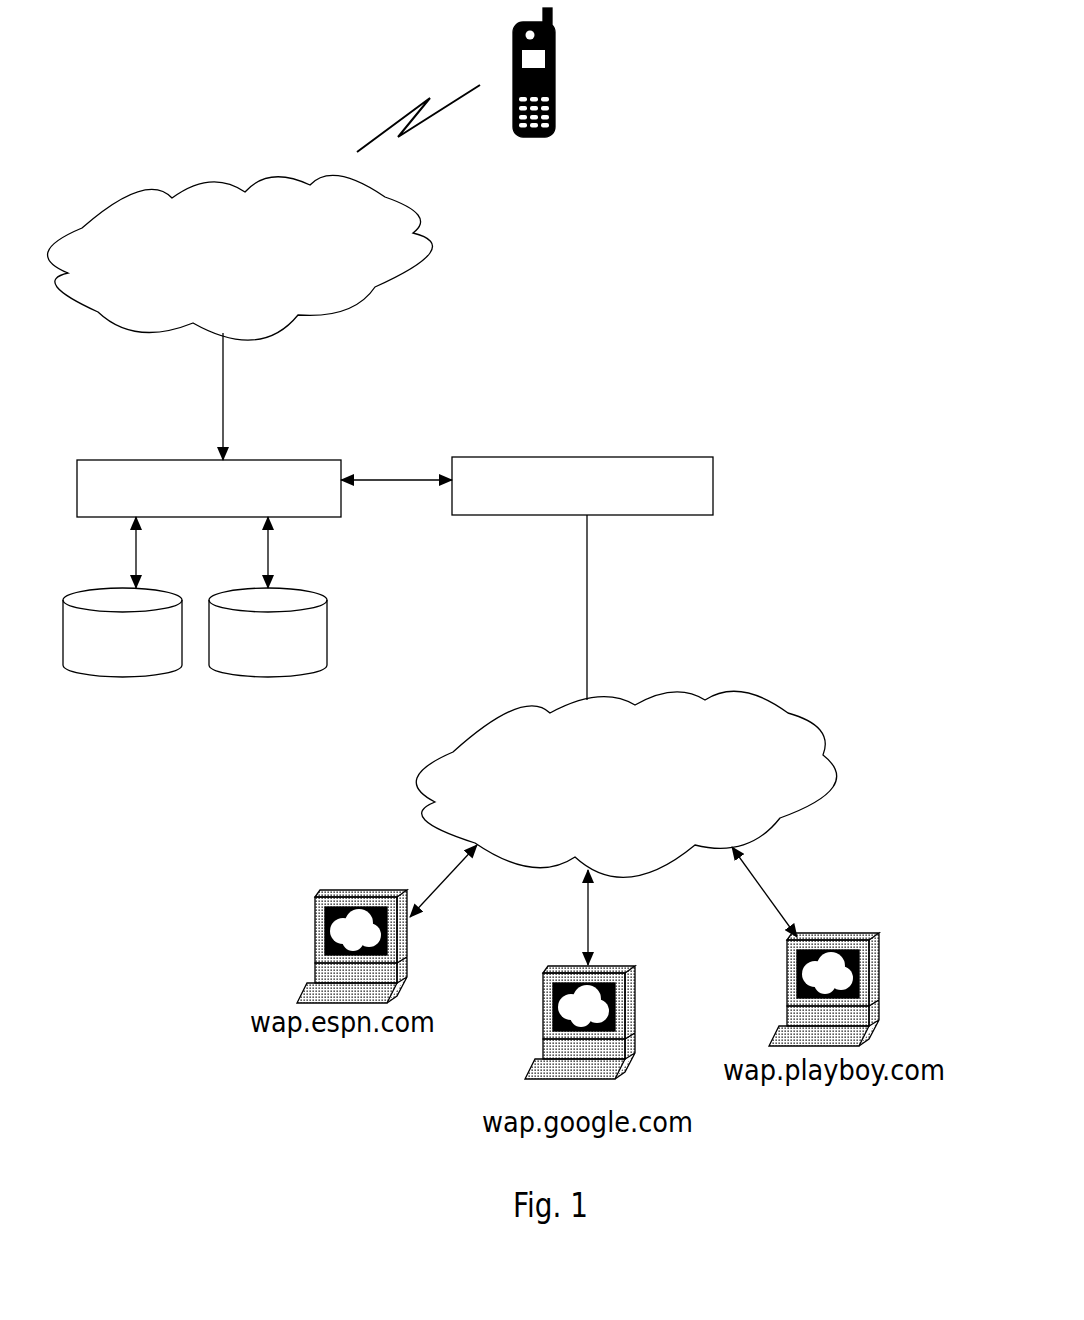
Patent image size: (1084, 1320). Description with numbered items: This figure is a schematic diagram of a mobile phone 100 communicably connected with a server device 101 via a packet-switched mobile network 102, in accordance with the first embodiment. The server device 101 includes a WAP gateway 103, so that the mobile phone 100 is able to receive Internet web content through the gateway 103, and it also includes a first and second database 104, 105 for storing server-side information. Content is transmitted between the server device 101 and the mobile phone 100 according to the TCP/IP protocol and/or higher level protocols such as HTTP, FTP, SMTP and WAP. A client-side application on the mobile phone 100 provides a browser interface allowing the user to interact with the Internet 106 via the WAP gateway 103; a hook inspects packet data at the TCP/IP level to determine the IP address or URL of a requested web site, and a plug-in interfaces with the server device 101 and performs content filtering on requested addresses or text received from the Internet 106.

The mobile phone 100 is at (457, 98).
The server device 101 is at (264, 488).
The packet-switched mobile network 102 is at (240, 317).
The WAP gateway 103 is at (582, 578).
The first database 104 is at (122, 597).
The second database 105 is at (268, 597).
The Internet 106 is at (623, 828).